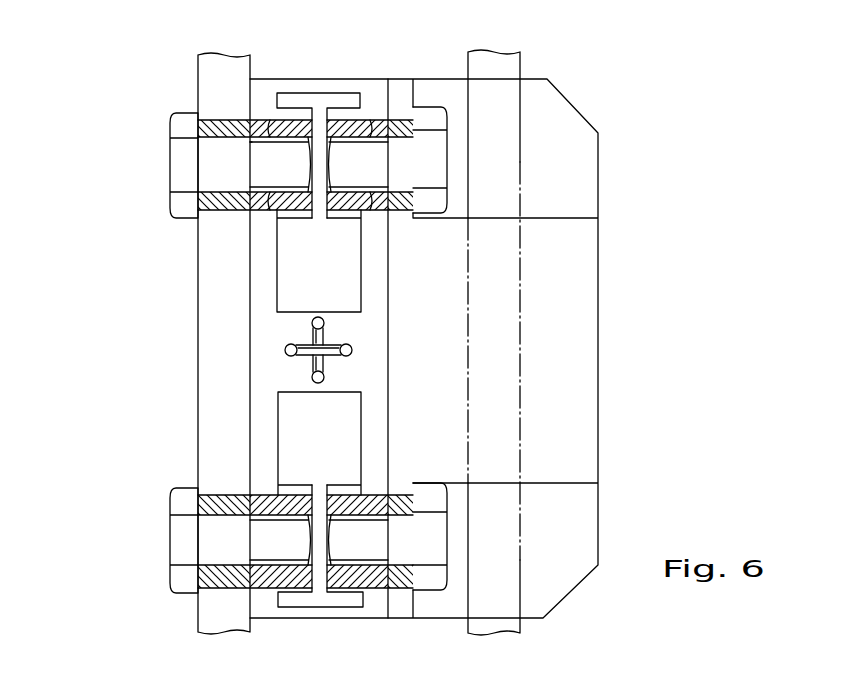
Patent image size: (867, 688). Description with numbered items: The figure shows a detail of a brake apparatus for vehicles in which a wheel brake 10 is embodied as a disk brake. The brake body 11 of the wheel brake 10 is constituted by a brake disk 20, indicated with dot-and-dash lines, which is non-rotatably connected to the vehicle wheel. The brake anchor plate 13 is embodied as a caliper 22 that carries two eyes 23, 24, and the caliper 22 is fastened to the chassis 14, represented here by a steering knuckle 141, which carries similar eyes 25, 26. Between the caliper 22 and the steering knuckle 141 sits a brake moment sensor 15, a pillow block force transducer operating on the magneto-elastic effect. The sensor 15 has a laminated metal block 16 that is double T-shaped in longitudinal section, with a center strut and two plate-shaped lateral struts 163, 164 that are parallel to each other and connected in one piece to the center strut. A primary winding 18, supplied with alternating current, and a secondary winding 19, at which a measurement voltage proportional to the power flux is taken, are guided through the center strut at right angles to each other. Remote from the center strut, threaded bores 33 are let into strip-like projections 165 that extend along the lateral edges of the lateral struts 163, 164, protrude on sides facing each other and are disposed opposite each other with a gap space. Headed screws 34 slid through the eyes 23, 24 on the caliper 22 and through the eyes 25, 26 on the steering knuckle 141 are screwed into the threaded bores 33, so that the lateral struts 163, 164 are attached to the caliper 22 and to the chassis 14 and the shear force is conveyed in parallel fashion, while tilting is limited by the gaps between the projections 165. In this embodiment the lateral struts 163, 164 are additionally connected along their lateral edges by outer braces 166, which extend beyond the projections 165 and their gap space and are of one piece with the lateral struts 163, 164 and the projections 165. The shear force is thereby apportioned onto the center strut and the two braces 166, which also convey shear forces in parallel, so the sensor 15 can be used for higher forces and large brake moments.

The wheel brake 10 is at (612, 211).
The brake body 11 is at (528, 159).
The brake anchor plate 13 is at (604, 298).
The chassis 14 is at (190, 255).
The brake moment sensor 15 is at (303, 70).
The metal block 16 is at (372, 372).
The primary winding 18 is at (307, 365).
The secondary winding 19 is at (303, 339).
The brake disk 20 is at (513, 133).
The caliper 22 is at (557, 423).
The eye 23 is at (397, 140).
The eye 24 is at (403, 578).
The eye 25 is at (218, 150).
The eye 26 is at (215, 520).
The threaded bore 33 is at (265, 118).
The headed screw 34 is at (188, 172).
The steering knuckle 141 is at (203, 335).
The lateral strut 163 is at (370, 286).
The lateral strut 164 is at (262, 277).
The strip-like projection 165 is at (295, 580).
The outer brace 166 is at (338, 87).